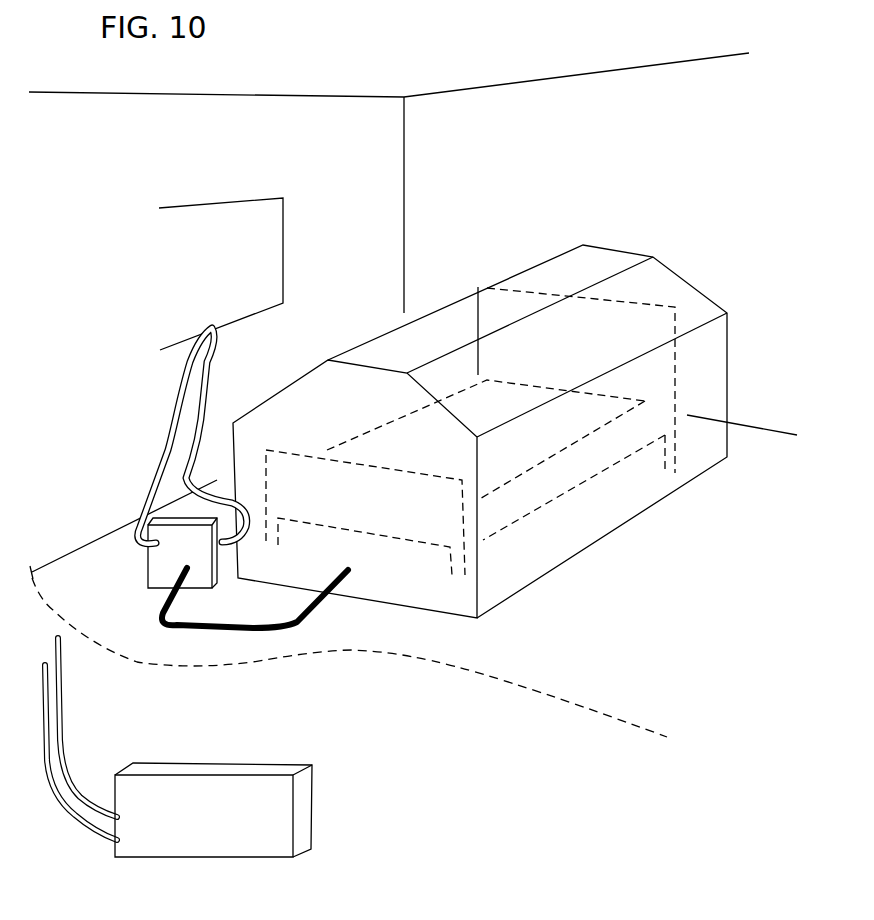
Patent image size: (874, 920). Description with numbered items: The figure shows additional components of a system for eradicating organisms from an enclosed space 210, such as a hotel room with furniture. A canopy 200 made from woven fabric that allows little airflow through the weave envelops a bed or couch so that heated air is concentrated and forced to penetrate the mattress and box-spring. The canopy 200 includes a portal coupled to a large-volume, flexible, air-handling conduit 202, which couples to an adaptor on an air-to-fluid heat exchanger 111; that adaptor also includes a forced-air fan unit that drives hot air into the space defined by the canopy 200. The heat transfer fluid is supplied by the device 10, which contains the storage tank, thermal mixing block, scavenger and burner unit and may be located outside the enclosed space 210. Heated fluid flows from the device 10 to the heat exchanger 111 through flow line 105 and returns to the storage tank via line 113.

The device 10 is at (243, 792).
The flow line 105 is at (160, 483).
The air-to-fluid heat exchanger 111 is at (173, 555).
The line 113 is at (200, 385).
The canopy 200 is at (567, 273).
The air-handling conduit 202 is at (310, 612).
The enclosed space 210 is at (657, 616).